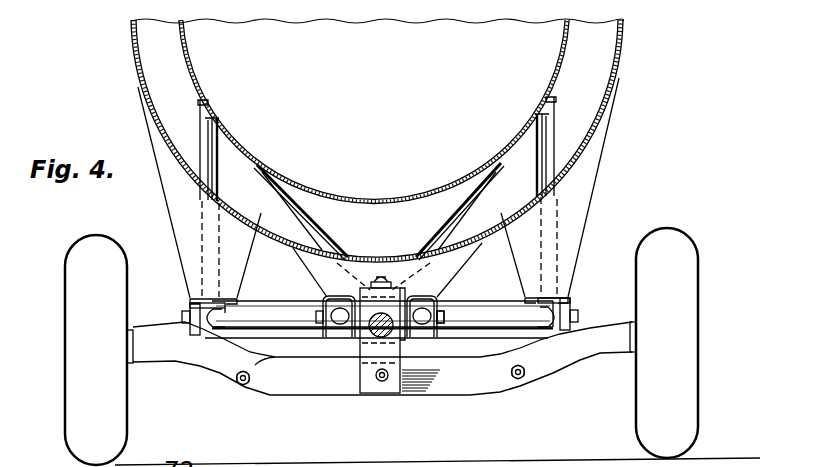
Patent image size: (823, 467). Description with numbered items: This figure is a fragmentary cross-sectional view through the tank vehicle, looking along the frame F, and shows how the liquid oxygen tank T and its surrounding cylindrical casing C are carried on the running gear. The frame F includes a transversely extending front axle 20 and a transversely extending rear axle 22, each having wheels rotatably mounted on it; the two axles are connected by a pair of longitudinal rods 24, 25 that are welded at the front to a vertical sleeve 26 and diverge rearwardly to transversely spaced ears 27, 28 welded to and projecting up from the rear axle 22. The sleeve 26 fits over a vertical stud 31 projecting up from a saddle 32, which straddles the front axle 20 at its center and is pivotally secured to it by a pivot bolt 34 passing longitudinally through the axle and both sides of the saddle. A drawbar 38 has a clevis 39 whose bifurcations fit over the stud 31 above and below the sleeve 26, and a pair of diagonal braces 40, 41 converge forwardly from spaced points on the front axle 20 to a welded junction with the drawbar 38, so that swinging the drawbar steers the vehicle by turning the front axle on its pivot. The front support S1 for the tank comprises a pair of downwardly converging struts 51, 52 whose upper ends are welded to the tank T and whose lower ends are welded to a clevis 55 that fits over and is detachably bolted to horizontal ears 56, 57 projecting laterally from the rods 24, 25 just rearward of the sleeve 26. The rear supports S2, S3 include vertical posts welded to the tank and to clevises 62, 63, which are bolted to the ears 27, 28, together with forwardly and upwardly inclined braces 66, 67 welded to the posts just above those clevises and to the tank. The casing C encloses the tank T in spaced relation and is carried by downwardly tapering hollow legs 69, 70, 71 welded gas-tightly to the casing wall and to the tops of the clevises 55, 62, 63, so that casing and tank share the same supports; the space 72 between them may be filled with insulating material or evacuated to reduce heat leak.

The cylindrical casing C is at (133, 52).
The tank T is at (190, 44).
The space 72 is at (163, 70).
The rear leg 70 is at (175, 203).
The rear leg 71 is at (578, 188).
The brace 66 is at (209, 170).
The brace 67 is at (558, 128).
The front support S1 is at (321, 208).
The rear support S2 is at (226, 152).
The rear support S3 is at (531, 147).
The strut 51 is at (297, 213).
The strut 52 is at (472, 200).
The front leg 69 is at (455, 263).
The front axle 20 is at (273, 387).
The rear axle 22 is at (488, 343).
The rod 24 is at (252, 315).
The rod 25 is at (500, 312).
The vertical sleeve 26 is at (405, 340).
The ear 27 is at (207, 327).
The ear 28 is at (561, 327).
The stud 31 is at (381, 278).
The saddle 32 is at (392, 385).
The pivot bolt 34 is at (380, 383).
The drawbar 38 is at (372, 335).
The clevis 39 is at (372, 330).
The diagonal brace 40 is at (236, 382).
The diagonal brace 41 is at (518, 383).
The clevis 55 is at (440, 297).
The horizontal ear 56 is at (330, 312).
The horizontal ear 57 is at (420, 310).
The clevis 62 is at (190, 303).
The clevis 63 is at (568, 300).
The frame F is at (322, 403).